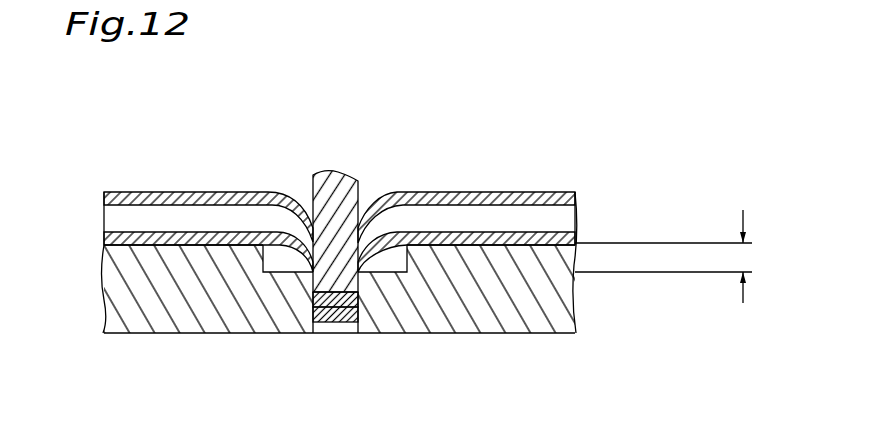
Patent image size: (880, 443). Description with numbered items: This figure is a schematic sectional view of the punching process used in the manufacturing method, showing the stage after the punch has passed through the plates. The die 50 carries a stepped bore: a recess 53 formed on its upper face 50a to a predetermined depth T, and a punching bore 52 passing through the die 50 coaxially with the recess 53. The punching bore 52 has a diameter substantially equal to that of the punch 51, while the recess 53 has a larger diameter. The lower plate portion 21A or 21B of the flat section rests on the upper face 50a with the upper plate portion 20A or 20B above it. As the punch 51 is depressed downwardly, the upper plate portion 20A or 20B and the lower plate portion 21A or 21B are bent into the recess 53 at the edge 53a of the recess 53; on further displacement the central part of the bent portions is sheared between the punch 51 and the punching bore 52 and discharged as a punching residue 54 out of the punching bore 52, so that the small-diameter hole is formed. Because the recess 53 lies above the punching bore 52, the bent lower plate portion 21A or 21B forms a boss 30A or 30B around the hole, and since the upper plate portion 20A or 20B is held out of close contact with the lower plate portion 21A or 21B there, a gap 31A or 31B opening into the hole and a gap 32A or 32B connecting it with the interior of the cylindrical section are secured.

The upper plate portion 20A is at (131, 190).
The upper plate portion 20B is at (349, 184).
The lower plate portion 21A is at (117, 230).
The lower plate portion 21B is at (158, 376).
The boss 30A is at (302, 262).
The boss 30B is at (398, 331).
The gap 31A is at (311, 273).
The gap 31B is at (423, 423).
The gap 32A is at (217, 200).
The gap 32B is at (425, 159).
The die 50 is at (547, 326).
The upper face 50a is at (548, 233).
The punch 51 is at (359, 181).
The punching bore 52 is at (356, 334).
The recess 53 is at (410, 194).
The edge 53a is at (258, 190).
The punching residue 54 is at (328, 326).
The predetermined depth T is at (663, 244).